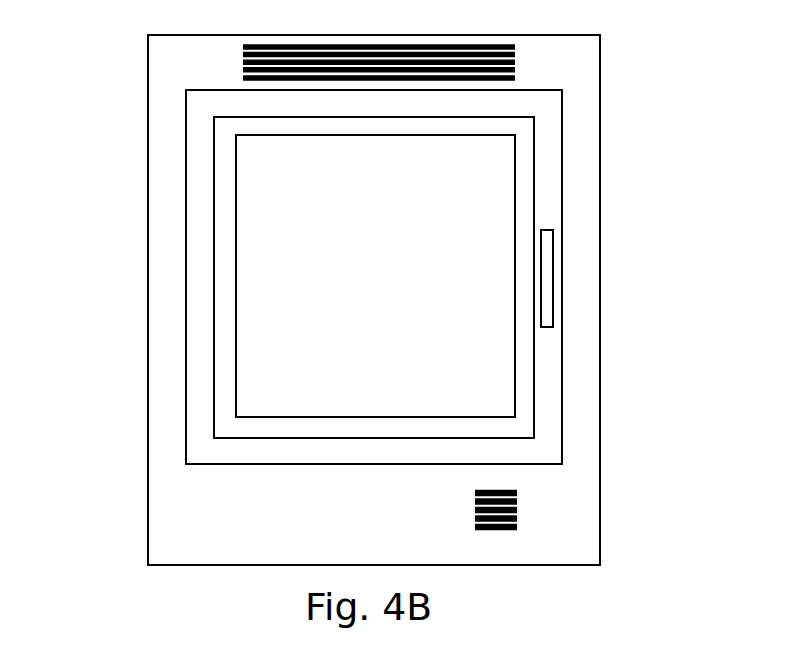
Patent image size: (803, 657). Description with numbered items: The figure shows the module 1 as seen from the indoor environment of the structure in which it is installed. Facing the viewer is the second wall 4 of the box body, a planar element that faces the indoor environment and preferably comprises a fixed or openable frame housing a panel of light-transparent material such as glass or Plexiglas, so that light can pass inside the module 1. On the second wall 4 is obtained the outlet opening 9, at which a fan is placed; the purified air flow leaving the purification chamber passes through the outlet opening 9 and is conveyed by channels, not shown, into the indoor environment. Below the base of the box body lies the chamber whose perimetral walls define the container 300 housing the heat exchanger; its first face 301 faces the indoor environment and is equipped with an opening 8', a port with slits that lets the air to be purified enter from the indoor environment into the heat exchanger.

The module 1 is at (363, 314).
The second wall 4 is at (552, 202).
The outlet opening 9 is at (338, 65).
The opening 8' is at (563, 497).
The container 300 is at (560, 565).
The first face 301 is at (182, 514).